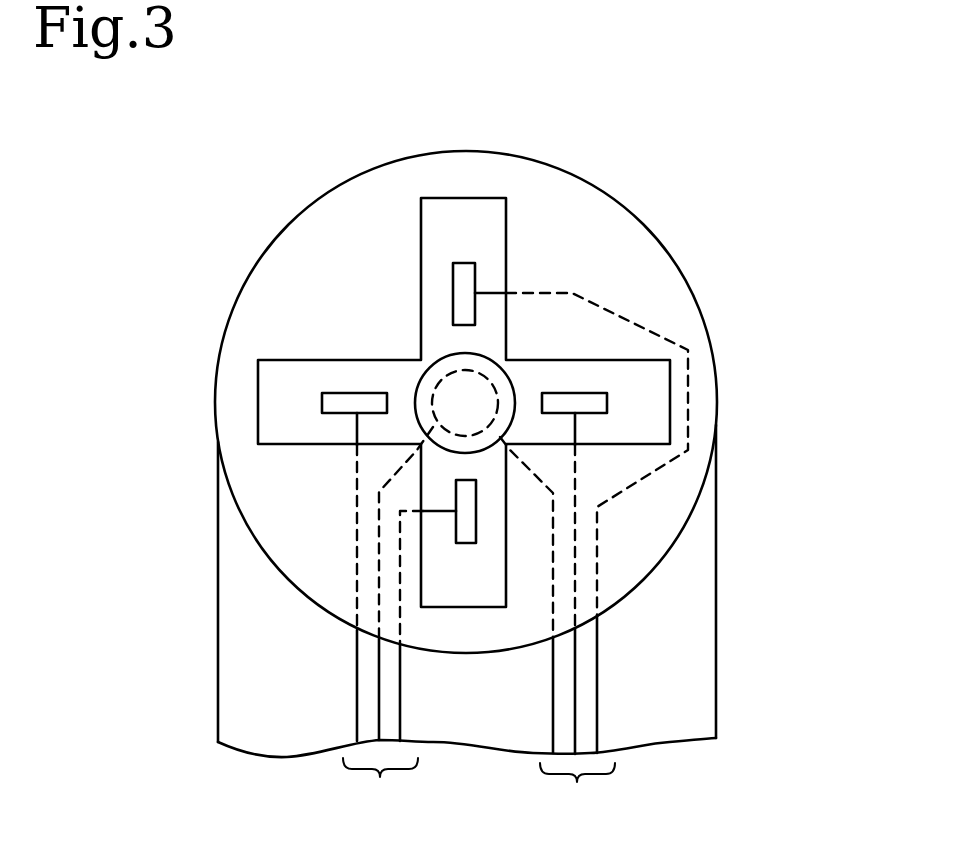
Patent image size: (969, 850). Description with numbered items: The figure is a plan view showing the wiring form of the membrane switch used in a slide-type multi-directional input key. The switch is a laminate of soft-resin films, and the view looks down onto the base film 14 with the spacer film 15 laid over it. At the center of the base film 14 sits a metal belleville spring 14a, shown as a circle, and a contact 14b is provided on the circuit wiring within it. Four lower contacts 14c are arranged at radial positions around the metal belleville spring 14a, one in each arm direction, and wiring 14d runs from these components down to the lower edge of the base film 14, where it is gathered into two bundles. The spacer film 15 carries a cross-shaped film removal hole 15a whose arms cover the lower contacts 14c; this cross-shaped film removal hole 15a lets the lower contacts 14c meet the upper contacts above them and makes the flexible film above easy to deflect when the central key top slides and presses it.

The base film 14 is at (716, 618).
The metal belleville spring 14a is at (447, 358).
The contact 14b is at (413, 353).
The lower contacts 14c is at (462, 263).
The wiring 14d is at (515, 557).
The spacer film 15 is at (690, 515).
The cross-shaped film removal hole 15a is at (487, 255).